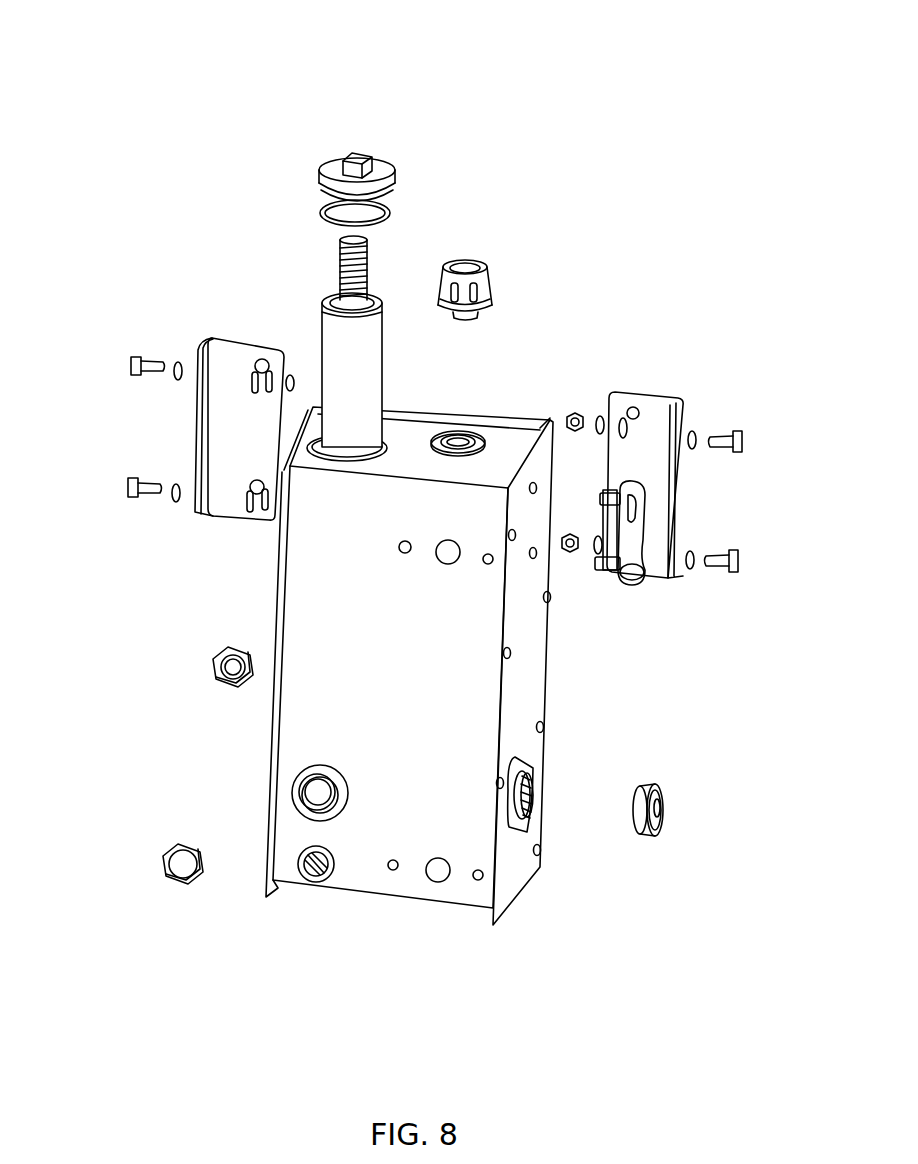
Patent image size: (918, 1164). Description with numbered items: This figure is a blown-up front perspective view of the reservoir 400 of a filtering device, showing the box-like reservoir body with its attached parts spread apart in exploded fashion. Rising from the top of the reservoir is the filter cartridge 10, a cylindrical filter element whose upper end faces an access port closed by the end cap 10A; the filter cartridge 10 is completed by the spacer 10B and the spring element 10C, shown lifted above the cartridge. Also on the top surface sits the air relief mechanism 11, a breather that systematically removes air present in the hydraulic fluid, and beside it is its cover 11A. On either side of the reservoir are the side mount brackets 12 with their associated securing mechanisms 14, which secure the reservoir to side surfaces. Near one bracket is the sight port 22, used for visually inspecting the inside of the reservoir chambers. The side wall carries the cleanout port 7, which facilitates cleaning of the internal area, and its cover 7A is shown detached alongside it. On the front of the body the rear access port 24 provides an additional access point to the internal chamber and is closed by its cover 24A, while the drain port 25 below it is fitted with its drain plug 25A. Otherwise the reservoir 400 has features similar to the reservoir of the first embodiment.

The reservoir 400 is at (520, 60).
The filter cartridge 10 is at (284, 273).
The end cap 10A is at (366, 154).
The spacer 10B is at (392, 205).
The spring element 10C is at (372, 258).
The air relief mechanism 11 is at (462, 438).
The cover 11A is at (482, 270).
The side mount brackets 12 is at (205, 448).
The securing mechanisms 14 is at (135, 356).
The sight port 22 is at (623, 585).
The cleanout port 7 is at (530, 775).
The cover 7A is at (660, 812).
The rear access port 24 is at (300, 770).
The cover 24A is at (222, 680).
The drain port 25 is at (320, 878).
The drain plug 25A is at (178, 885).